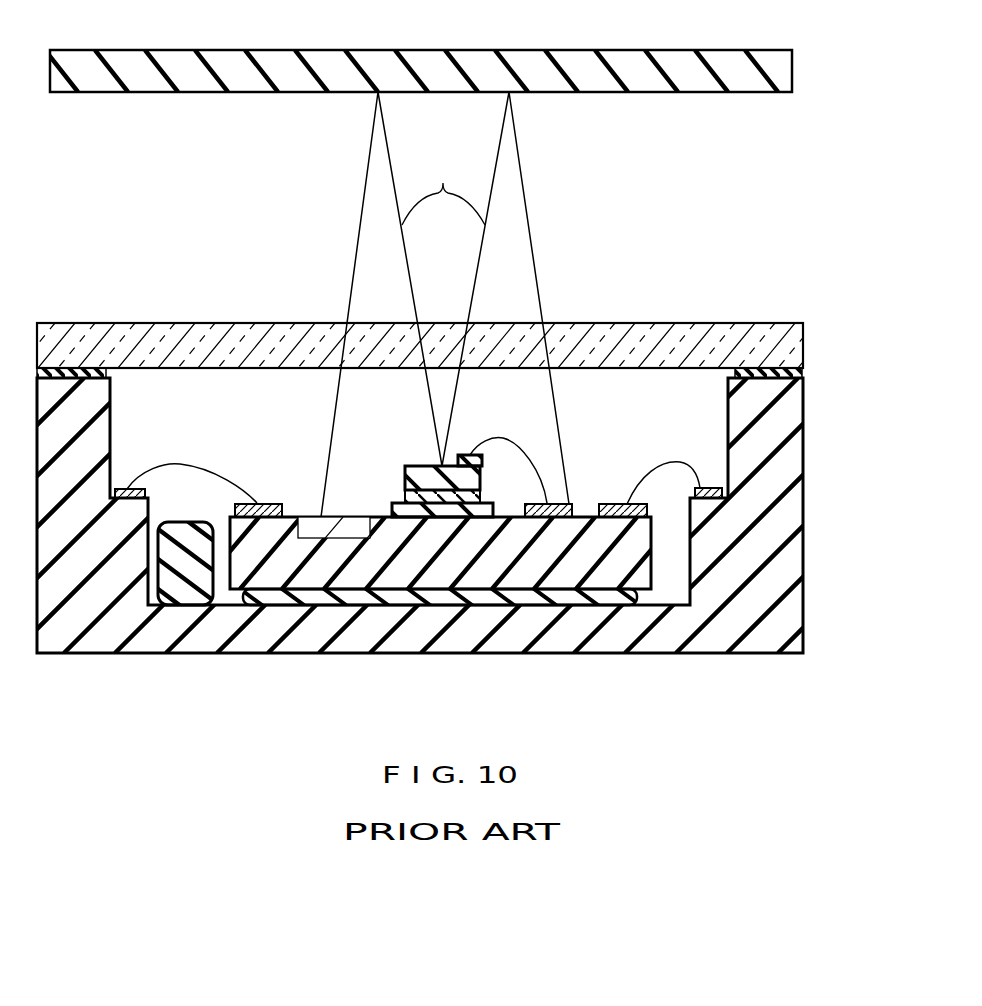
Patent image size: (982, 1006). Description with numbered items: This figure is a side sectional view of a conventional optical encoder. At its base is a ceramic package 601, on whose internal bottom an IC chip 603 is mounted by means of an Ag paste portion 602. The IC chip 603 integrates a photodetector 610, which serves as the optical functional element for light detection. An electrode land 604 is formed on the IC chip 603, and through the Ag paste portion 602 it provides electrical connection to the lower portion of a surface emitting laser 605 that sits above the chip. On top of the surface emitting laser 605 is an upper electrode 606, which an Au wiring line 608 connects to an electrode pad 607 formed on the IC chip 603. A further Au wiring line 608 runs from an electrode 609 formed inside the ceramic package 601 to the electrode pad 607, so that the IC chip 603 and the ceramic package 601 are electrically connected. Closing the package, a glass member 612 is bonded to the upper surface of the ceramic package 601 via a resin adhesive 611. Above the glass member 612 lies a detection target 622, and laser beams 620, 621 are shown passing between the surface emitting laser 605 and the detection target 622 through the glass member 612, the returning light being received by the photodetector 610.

The ceramic package 601 is at (805, 629).
The Ag paste portion 602 is at (403, 496).
The IC chip 603 is at (582, 517).
The electrode land 604 is at (393, 509).
The surface emitting laser 605 is at (418, 466).
The upper electrode 606 is at (467, 455).
The electrode pad 607 is at (264, 503).
The Au wiring line 608 is at (188, 465).
The electrode 609 is at (130, 488).
The photodetector 610 is at (312, 517).
The resin adhesive 611 is at (805, 374).
The glass member 612 is at (805, 347).
The laser beam 620 is at (443, 190).
The laser beam 621 is at (523, 178).
The detection target 622 is at (795, 72).